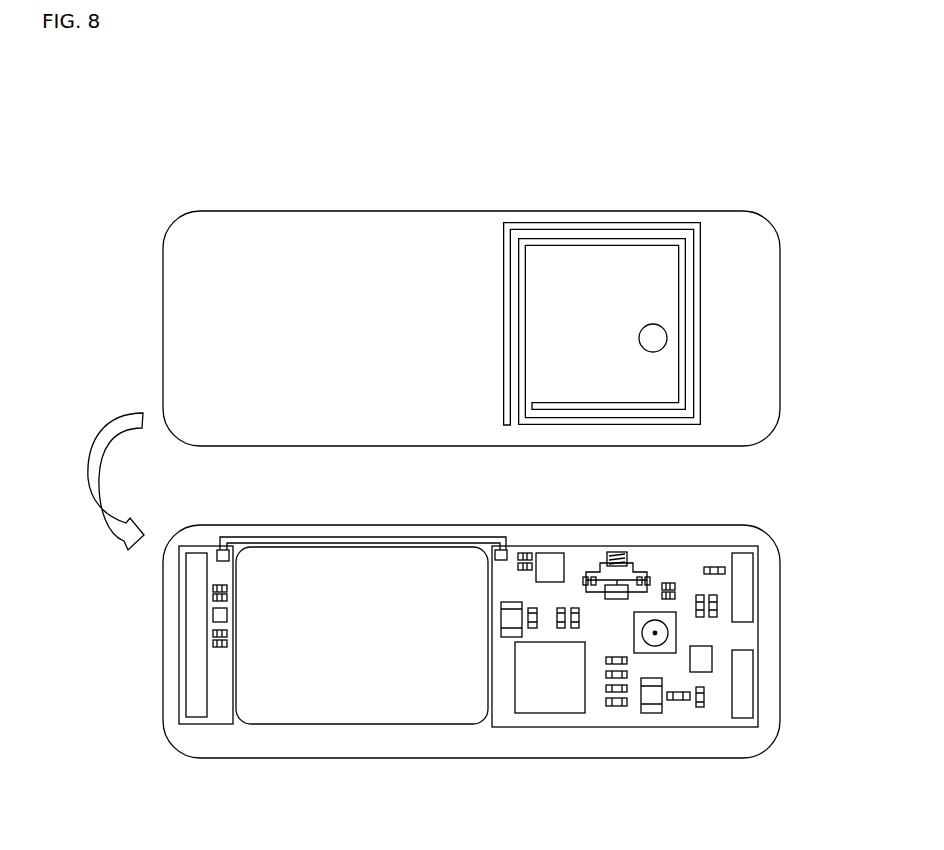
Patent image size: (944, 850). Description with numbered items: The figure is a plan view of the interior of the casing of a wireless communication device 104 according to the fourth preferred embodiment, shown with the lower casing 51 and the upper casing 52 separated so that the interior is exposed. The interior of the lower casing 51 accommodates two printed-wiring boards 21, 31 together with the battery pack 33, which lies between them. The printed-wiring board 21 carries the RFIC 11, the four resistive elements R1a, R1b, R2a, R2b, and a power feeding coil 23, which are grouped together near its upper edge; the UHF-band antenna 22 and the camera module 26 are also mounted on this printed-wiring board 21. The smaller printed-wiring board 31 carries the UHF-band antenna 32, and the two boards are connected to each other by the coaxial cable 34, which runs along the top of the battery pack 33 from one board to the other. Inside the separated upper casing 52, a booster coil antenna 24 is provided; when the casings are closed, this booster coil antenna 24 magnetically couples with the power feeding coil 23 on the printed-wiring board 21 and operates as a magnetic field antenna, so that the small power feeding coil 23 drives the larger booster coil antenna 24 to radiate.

The wireless communication device 104 is at (817, 129).
The upper casing 52 is at (764, 215).
The booster coil antenna 24 is at (706, 317).
The lower casing 51 is at (766, 530).
The coaxial cable 34 is at (383, 536).
The UHF-band antenna 32 is at (195, 638).
The printed-wiring board 31 is at (222, 715).
The battery pack 33 is at (368, 715).
The printed-wiring board 21 is at (598, 715).
The power feeding coil 23 is at (615, 552).
The RFIC 11 is at (618, 600).
The resistive element R2a is at (583, 577).
The resistive element R1a is at (593, 577).
The resistive element R2b is at (640, 577).
The resistive element R1b is at (648, 580).
The camera module 26 is at (672, 633).
The UHF-band antenna 22 is at (748, 595).